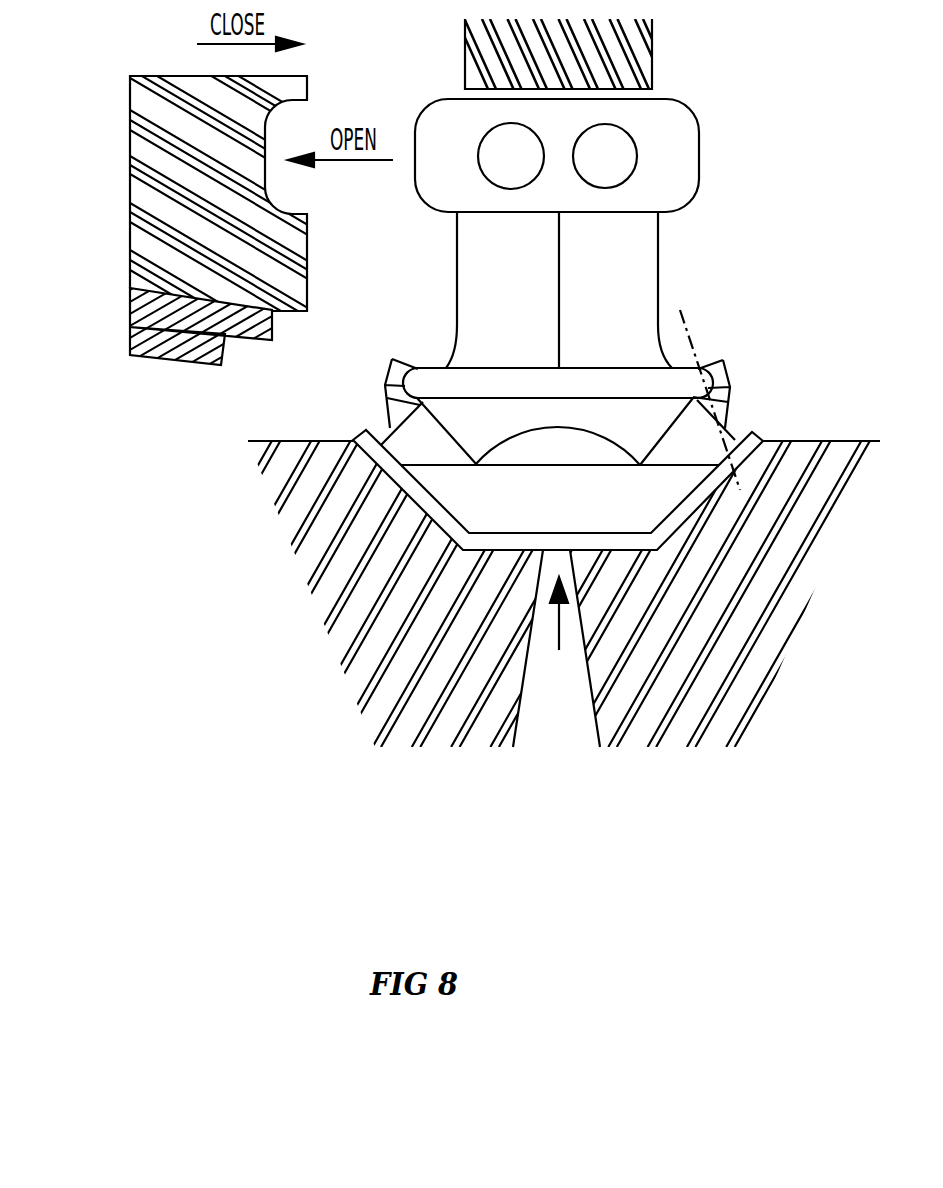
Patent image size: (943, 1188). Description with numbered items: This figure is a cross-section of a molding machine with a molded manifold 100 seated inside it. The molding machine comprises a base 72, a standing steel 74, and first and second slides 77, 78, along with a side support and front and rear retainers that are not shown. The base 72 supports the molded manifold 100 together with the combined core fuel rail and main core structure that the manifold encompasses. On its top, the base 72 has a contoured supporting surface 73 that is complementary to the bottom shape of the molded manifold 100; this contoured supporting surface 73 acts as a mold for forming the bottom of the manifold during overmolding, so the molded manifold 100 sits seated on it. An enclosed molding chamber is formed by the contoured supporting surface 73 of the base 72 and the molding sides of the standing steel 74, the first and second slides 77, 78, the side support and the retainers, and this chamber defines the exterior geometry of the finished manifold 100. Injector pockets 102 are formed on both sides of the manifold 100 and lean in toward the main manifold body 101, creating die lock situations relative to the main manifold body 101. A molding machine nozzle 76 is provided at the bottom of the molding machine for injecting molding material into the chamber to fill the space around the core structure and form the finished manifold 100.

The base 72 is at (315, 580).
The contoured supporting surface 73 is at (372, 487).
The standing steel 74 is at (653, 53).
The molding machine nozzle 76 is at (532, 732).
The first slide 77 is at (130, 144).
The second slide 78 is at (130, 317).
The molded manifold 100 is at (716, 148).
The main manifold body 101 is at (658, 246).
The injector pockets 102 is at (713, 358).